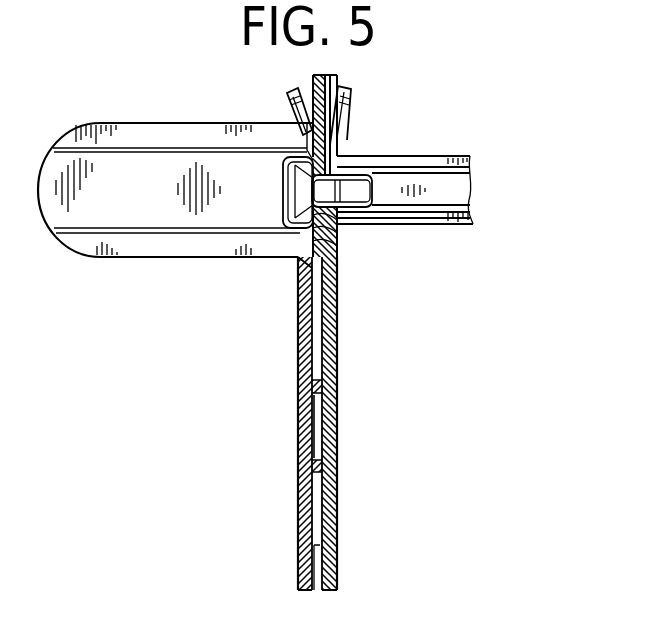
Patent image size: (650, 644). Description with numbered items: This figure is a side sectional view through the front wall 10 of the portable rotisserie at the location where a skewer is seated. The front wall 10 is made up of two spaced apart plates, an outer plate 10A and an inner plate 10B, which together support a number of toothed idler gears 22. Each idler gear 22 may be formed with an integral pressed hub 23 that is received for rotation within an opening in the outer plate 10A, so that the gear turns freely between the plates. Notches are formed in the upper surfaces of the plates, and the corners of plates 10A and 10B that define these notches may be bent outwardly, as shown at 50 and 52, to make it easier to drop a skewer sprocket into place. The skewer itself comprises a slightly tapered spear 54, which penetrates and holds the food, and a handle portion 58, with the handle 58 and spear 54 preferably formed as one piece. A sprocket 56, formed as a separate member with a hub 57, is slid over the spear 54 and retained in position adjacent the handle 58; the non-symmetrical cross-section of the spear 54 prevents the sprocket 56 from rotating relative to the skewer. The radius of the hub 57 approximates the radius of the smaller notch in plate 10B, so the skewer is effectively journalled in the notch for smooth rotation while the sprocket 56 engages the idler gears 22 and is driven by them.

The handle portion 58 is at (156, 197).
The sprocket 56 is at (312, 80).
The outwardly bent corner of plate 10A 50 is at (296, 106).
The outwardly bent corner of plate 10B 52 is at (348, 110).
The spear 54 is at (424, 215).
The hub 57 is at (332, 232).
The front wall 10 is at (298, 311).
The outer plate 10A is at (301, 503).
The inner plate 10B is at (328, 491).
The pressed hub 23 is at (298, 428).
The idler gear 22 is at (314, 557).